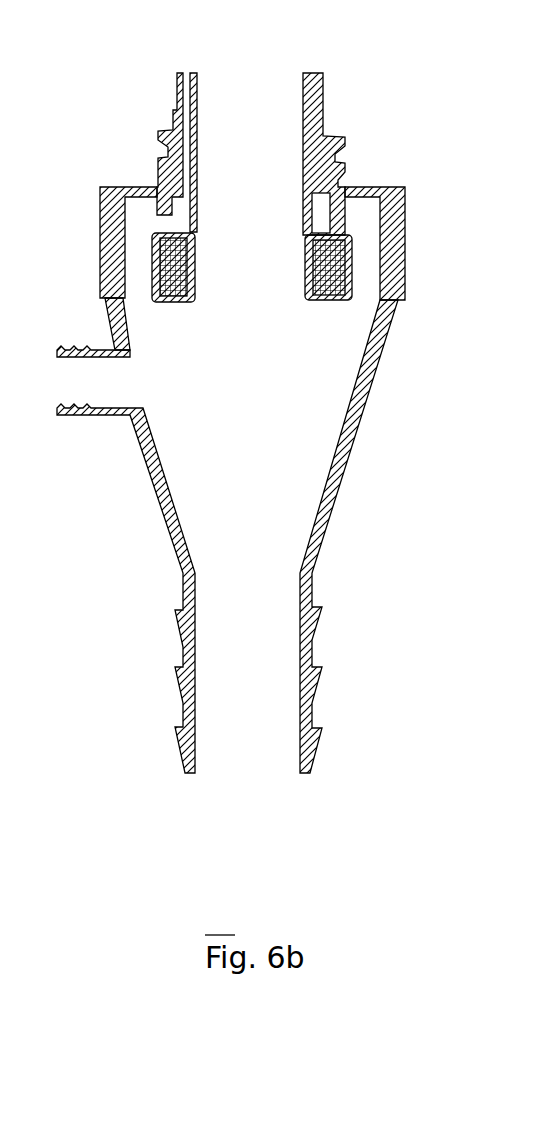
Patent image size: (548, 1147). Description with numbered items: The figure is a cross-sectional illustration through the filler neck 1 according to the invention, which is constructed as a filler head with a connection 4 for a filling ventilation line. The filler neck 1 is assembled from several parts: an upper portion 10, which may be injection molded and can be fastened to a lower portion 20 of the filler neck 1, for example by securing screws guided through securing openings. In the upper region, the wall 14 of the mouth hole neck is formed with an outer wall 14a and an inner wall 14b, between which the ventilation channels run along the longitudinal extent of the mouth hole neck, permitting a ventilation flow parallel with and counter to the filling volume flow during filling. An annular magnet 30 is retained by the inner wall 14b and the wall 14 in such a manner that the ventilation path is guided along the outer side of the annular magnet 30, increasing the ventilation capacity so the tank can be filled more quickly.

The filler neck 1 is at (405, 28).
The connection 4 is at (90, 395).
The upper portion 10 is at (108, 252).
The wall 14 is at (322, 108).
The outer wall 14a is at (178, 100).
The inner wall 14b is at (197, 88).
The lower portion 20 is at (337, 487).
The annular magnet 30 is at (168, 255).